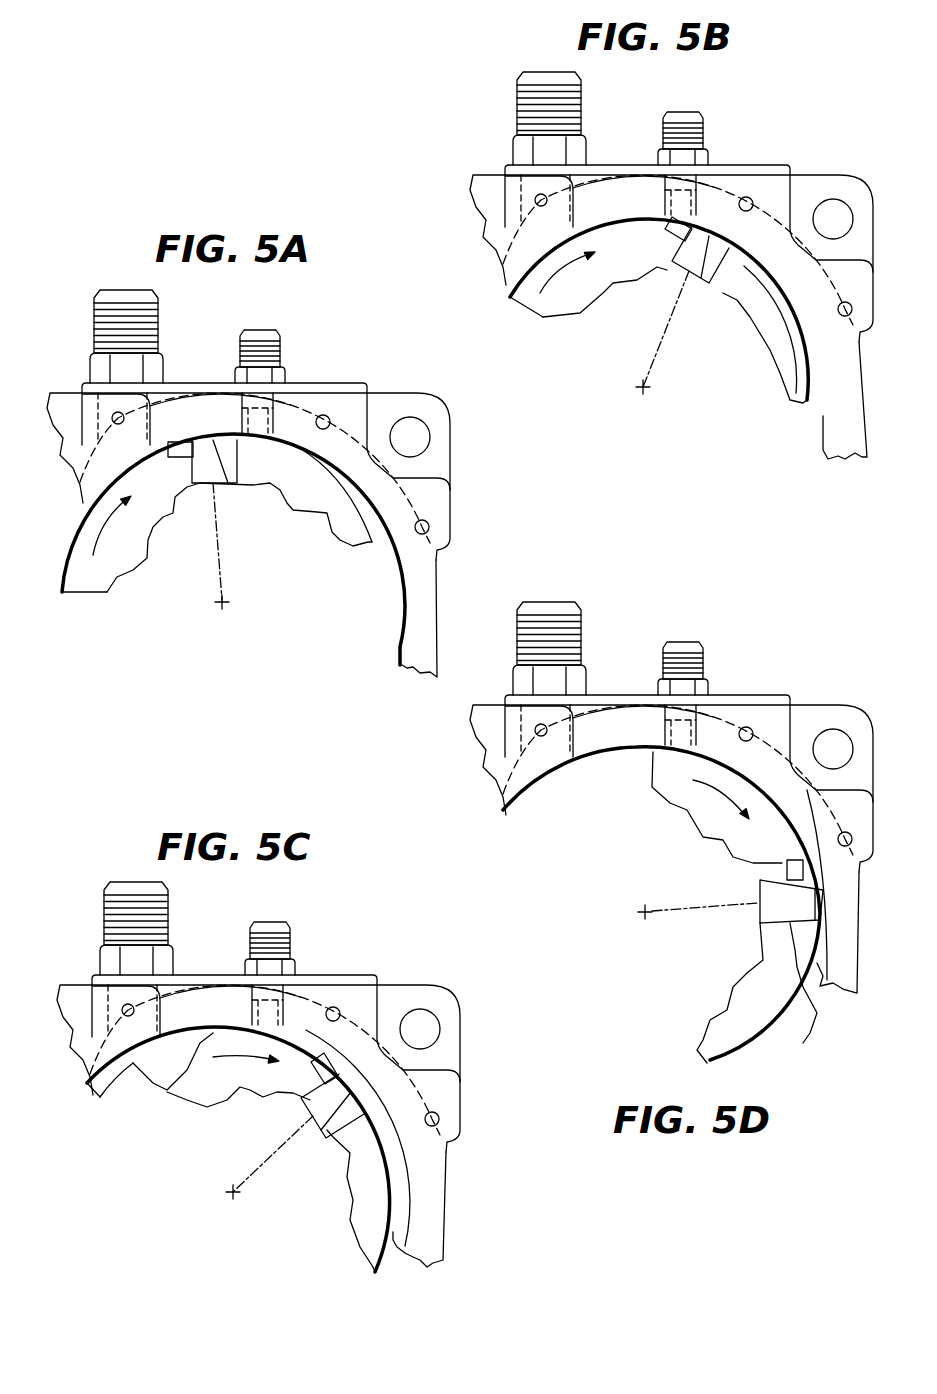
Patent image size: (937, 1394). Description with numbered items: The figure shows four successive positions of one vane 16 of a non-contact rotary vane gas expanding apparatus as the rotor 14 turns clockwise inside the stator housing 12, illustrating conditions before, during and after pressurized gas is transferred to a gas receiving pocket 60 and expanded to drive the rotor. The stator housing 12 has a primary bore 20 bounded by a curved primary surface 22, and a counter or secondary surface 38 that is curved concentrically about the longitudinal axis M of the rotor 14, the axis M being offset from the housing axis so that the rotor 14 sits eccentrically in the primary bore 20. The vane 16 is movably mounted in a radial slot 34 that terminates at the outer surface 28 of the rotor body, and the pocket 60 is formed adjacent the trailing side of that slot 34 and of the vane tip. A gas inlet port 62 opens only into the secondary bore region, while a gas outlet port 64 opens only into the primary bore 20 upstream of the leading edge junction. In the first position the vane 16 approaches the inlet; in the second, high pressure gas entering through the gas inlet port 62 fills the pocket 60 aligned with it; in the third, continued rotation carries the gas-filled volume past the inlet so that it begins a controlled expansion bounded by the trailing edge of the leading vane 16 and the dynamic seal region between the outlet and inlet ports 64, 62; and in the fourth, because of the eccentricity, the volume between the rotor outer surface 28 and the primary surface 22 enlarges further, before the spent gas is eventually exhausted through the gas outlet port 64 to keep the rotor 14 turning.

In FIG. 5A, the stator housing 12 is at (333, 383).
In FIG. 5B, the stator housing 12 is at (747, 167).
In FIG. 5C, the stator housing 12 is at (310, 973).
In FIG. 5D, the stator housing 12 is at (730, 695).
In FIG. 5A, the rotor 14 is at (325, 510).
In FIG. 5B, the rotor 14 is at (780, 380).
In FIG. 5C, the rotor 14 is at (254, 1152).
In FIG. 5D, the rotor 14 is at (688, 802).
In FIG. 5A, the vane 16 is at (197, 485).
In FIG. 5B, the vane 16 is at (707, 277).
In FIG. 5C, the vane 16 is at (325, 1125).
In FIG. 5D, the vane 16 is at (770, 912).
In FIG. 5C, the primary bore 20 is at (410, 1188).
In FIG. 5A, the primary surface 22 is at (400, 640).
In FIG. 5B, the primary surface 22 is at (823, 417).
In FIG. 5C, the primary surface 22 is at (393, 1262).
In FIG. 5D, the primary surface 22 is at (830, 997).
In FIG. 5A, the outer surface 28 is at (77, 537).
In FIG. 5B, the outer surface 28 is at (502, 290).
In FIG. 5C, the outer surface 28 is at (415, 1217).
In FIG. 5D, the outer surface 28 is at (661, 903).
In FIG. 5B, the slot 34 is at (677, 233).
In FIG. 5C, the slot 34 is at (320, 1102).
In FIG. 5D, the slot 34 is at (817, 1020).
In FIG. 5A, the secondary surface 38 is at (233, 483).
In FIG. 5B, the secondary surface 38 is at (637, 277).
In FIG. 5C, the secondary surface 38 is at (150, 1062).
In FIG. 5D, the secondary surface 38 is at (610, 753).
In FIG. 5A, the gas receiving pocket 60 is at (187, 462).
In FIG. 5B, the gas receiving pocket 60 is at (660, 250).
In FIG. 5C, the gas receiving pocket 60 is at (315, 1083).
In FIG. 5D, the gas receiving pocket 60 is at (783, 866).
In FIG. 5A, the gas inlet port 62 is at (293, 407).
In FIG. 5B, the gas inlet port 62 is at (662, 217).
In FIG. 5C, the gas inlet port 62 is at (253, 1010).
In FIG. 5D, the gas inlet port 62 is at (667, 737).
In FIG. 5A, the gas outlet port 64 is at (155, 447).
In FIG. 5B, the gas outlet port 64 is at (580, 230).
In FIG. 5C, the gas outlet port 64 is at (167, 1033).
In FIG. 5D, the gas outlet port 64 is at (580, 760).
In FIG. 5A, the longitudinal axis M is at (224, 604).
In FIG. 5B, the longitudinal axis M is at (646, 390).
In FIG. 5C, the longitudinal axis M is at (236, 1195).
In FIG. 5D, the longitudinal axis M is at (643, 914).